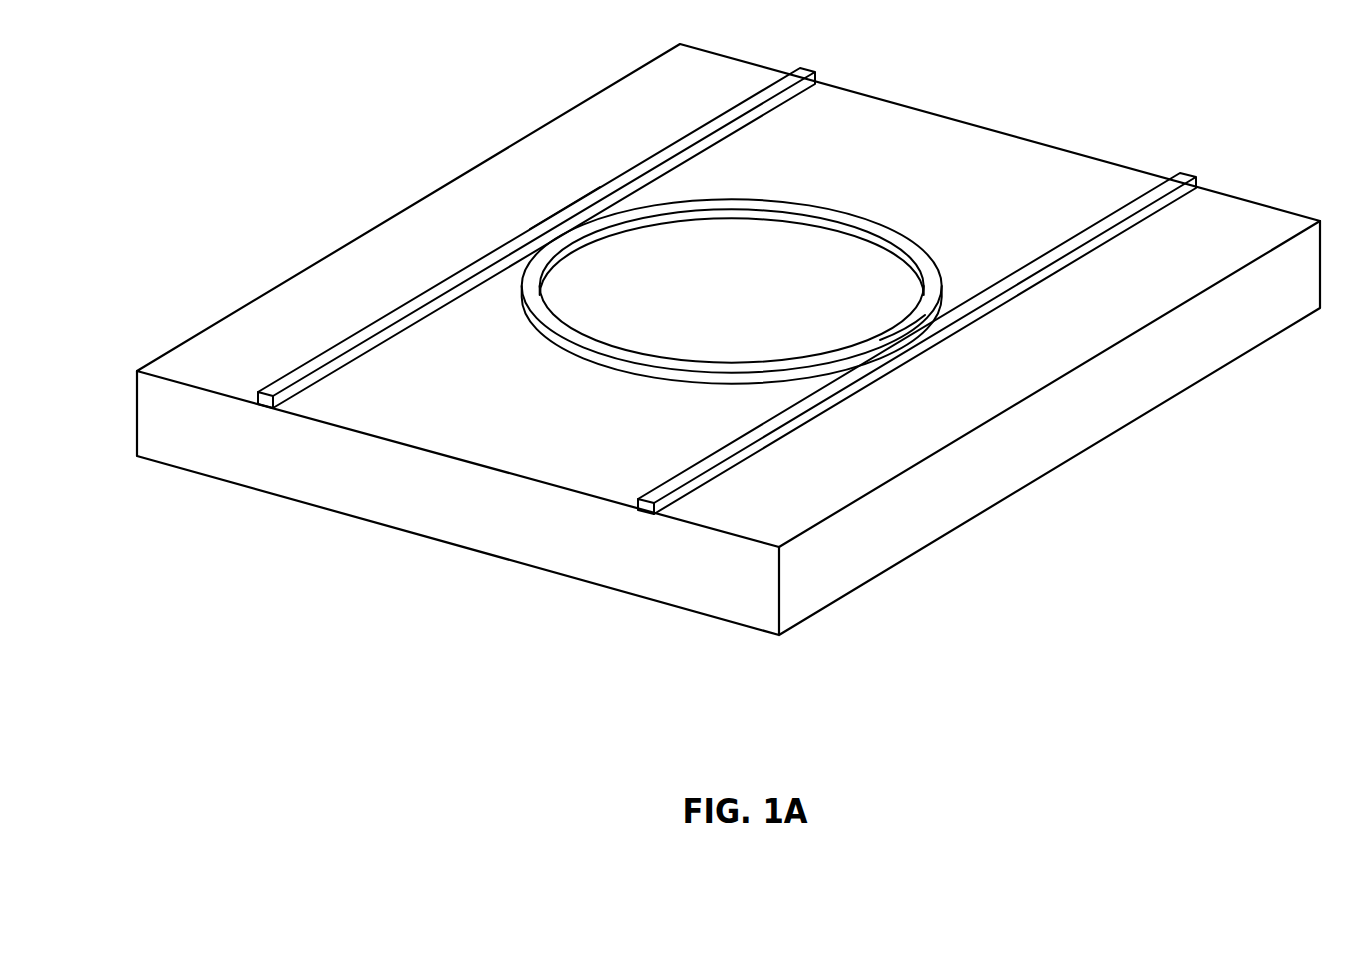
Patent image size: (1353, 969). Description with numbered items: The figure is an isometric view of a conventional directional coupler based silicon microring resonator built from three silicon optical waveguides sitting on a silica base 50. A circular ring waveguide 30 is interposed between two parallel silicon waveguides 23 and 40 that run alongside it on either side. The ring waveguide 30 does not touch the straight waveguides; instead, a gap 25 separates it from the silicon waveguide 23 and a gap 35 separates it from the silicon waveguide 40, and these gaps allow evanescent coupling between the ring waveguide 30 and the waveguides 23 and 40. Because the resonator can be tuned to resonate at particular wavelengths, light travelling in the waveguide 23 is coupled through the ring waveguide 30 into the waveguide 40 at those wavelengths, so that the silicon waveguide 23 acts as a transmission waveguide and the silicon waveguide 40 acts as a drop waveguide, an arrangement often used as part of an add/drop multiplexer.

The silicon waveguide 23 is at (457, 274).
The gap 25 is at (556, 242).
The circular ring waveguide 30 is at (868, 215).
The gap 35 is at (903, 333).
The silicon waveguide 40 is at (1150, 193).
The silica base 50 is at (1140, 415).